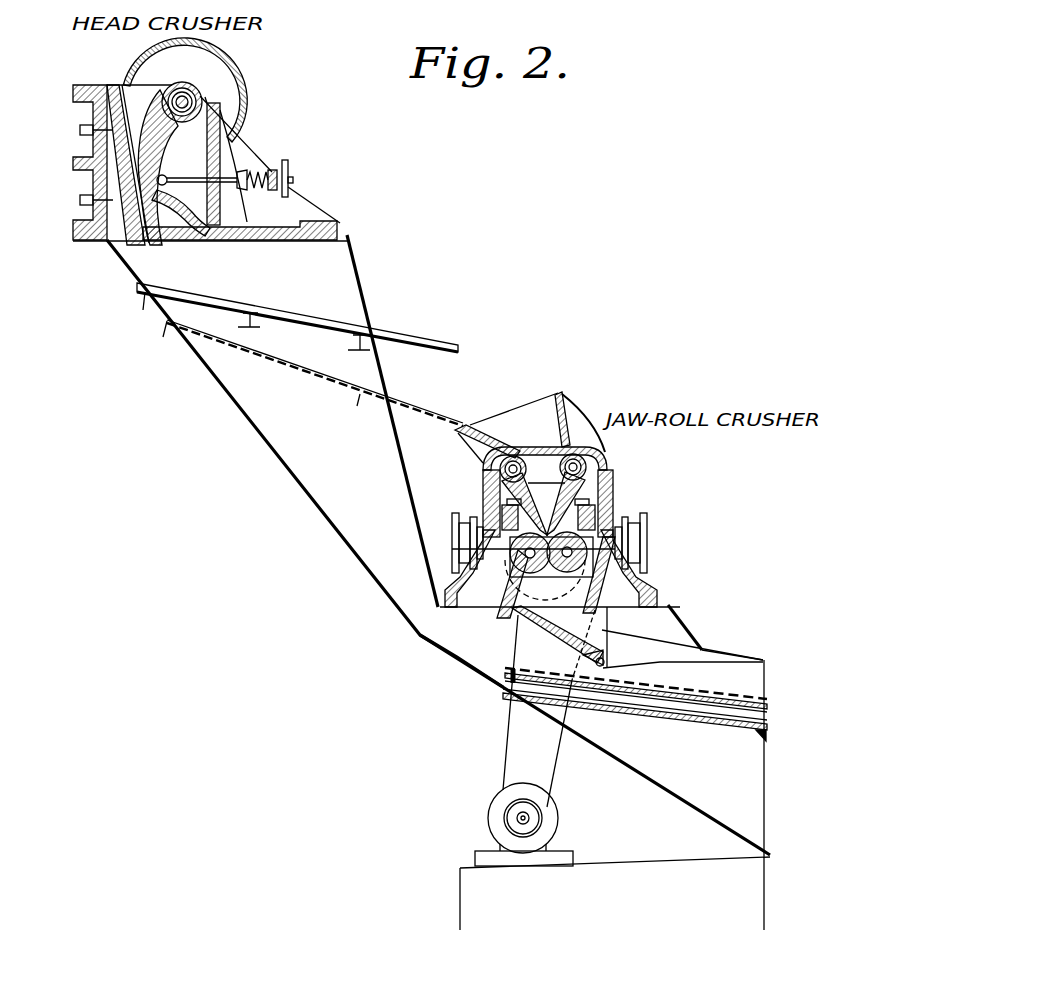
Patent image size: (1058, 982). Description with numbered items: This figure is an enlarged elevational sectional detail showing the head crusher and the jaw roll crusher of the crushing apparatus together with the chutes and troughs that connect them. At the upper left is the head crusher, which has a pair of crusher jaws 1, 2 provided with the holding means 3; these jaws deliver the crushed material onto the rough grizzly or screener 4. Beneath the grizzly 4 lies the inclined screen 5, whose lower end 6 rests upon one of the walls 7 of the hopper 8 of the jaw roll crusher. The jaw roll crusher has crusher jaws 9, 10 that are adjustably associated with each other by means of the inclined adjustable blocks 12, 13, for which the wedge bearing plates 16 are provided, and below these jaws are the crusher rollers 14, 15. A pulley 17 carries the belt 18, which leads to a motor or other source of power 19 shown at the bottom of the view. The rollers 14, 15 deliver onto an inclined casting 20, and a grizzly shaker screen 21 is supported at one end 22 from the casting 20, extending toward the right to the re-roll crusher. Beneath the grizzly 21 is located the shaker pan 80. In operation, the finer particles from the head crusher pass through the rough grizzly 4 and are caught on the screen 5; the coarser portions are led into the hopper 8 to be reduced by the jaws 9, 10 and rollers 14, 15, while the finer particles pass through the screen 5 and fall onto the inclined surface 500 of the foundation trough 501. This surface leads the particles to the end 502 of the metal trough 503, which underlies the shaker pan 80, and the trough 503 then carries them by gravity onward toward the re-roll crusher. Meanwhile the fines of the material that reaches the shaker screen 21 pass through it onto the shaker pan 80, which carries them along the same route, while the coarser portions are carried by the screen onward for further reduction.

The crusher jaw 1 is at (115, 178).
The crusher jaw 2 is at (150, 152).
The holding means 3 is at (290, 163).
The rough grizzly 4 is at (313, 313).
The inclined screen 5 is at (322, 374).
The lower end of inclined screen 6 is at (470, 425).
The hopper wall 7 is at (483, 438).
The hopper 8 is at (550, 415).
The crusher jaw 9 is at (503, 487).
The crusher jaw 10 is at (530, 483).
The inclined adjustable block 12 is at (502, 510).
The inclined adjustable block 13 is at (595, 512).
The crusher roller 14 is at (520, 565).
The crusher roller 15 is at (647, 548).
The wedge bearing plates 16 is at (452, 549).
The pulley 17 is at (562, 597).
The belt 18 is at (507, 728).
The motor or source of power 19 is at (557, 813).
The inclined casting 20 is at (557, 632).
The grizzly shaker screen 21 is at (707, 688).
The end of grizzly shaker screen 22 is at (605, 655).
The shaker pan 80 is at (737, 710).
The inclined surface 500 is at (303, 483).
The foundation trough 501 is at (452, 664).
The end of metal trough 502 is at (497, 683).
The metal trough 503 is at (683, 652).